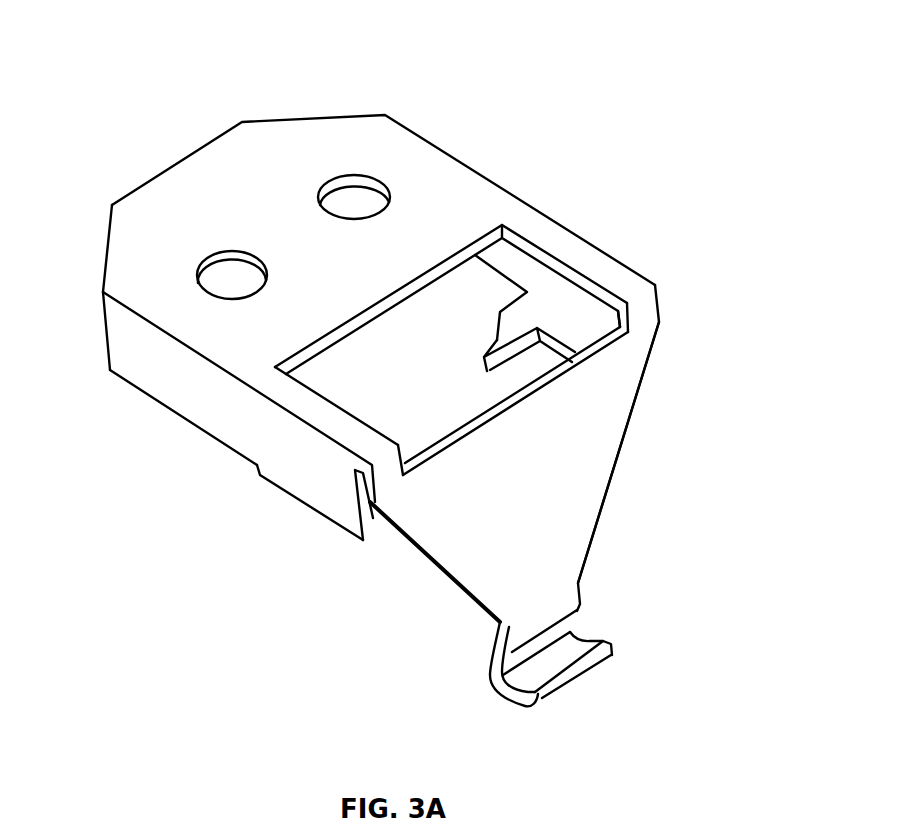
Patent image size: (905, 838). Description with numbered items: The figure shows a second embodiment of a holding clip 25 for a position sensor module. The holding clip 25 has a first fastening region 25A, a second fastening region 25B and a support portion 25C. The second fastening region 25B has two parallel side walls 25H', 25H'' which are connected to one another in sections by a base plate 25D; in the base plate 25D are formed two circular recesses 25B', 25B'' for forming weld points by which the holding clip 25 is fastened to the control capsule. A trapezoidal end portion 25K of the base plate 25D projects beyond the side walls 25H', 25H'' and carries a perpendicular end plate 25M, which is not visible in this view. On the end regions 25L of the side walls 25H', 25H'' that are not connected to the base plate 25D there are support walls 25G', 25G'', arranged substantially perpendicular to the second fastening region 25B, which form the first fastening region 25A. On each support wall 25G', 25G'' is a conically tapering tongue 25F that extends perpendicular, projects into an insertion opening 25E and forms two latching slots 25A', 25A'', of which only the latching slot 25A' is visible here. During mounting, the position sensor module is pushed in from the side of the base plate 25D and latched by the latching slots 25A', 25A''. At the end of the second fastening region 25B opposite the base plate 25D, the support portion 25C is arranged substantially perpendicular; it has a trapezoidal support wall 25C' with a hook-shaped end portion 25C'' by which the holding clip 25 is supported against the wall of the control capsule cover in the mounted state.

The holding clip 25 is at (517, 182).
The base plate 25D is at (254, 165).
The end plate 25M is at (110, 200).
The trapezoidal end portion 25K is at (132, 237).
The second fastening region 25B is at (194, 386).
The side wall 25H' is at (183, 437).
The end regions 25L is at (285, 507).
The support wall 25G' is at (340, 545).
The circular recess 25B' is at (187, 187).
The circular recess 25B'' is at (403, 131).
The insertion opening 25E is at (468, 348).
The side wall 25H'' is at (471, 270).
The support wall 25G'' is at (590, 278).
The conically tapering tongue 25F is at (497, 347).
The first fastening region 25A is at (515, 401).
The latching slot 25A' is at (638, 354).
The latching slot 25A'' is at (385, 415).
The support wall 25C' is at (630, 452).
The support portion 25C is at (429, 581).
The hook-shaped end portion 25C'' is at (592, 649).